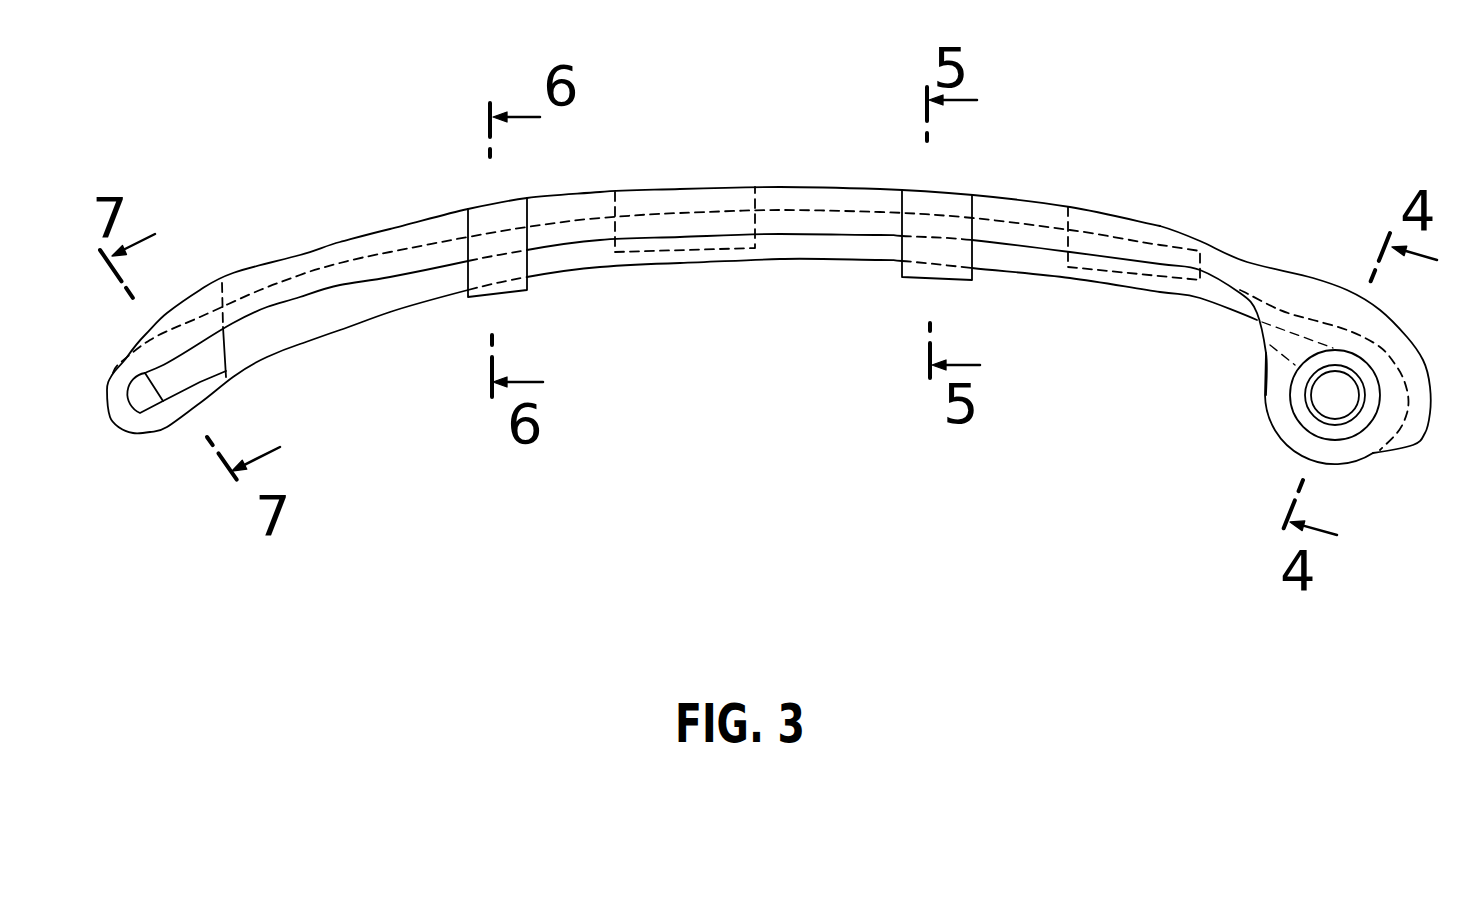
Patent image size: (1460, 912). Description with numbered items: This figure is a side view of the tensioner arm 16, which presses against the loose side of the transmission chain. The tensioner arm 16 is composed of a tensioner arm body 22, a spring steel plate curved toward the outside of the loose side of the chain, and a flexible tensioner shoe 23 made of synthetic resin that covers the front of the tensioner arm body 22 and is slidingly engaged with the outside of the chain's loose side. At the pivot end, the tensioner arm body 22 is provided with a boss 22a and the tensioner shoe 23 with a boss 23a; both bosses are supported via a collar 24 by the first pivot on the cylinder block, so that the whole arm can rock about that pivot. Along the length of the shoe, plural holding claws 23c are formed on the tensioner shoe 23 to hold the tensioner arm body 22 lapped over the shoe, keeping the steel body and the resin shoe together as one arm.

The tensioner arm 16 is at (769, 367).
The tensioner arm body 22 is at (1002, 262).
The tensioner shoe 23 is at (1055, 242).
The boss 22a is at (1280, 367).
The boss 23a is at (1341, 460).
The holding claws 23c is at (758, 222).
The collar 24 is at (1303, 417).